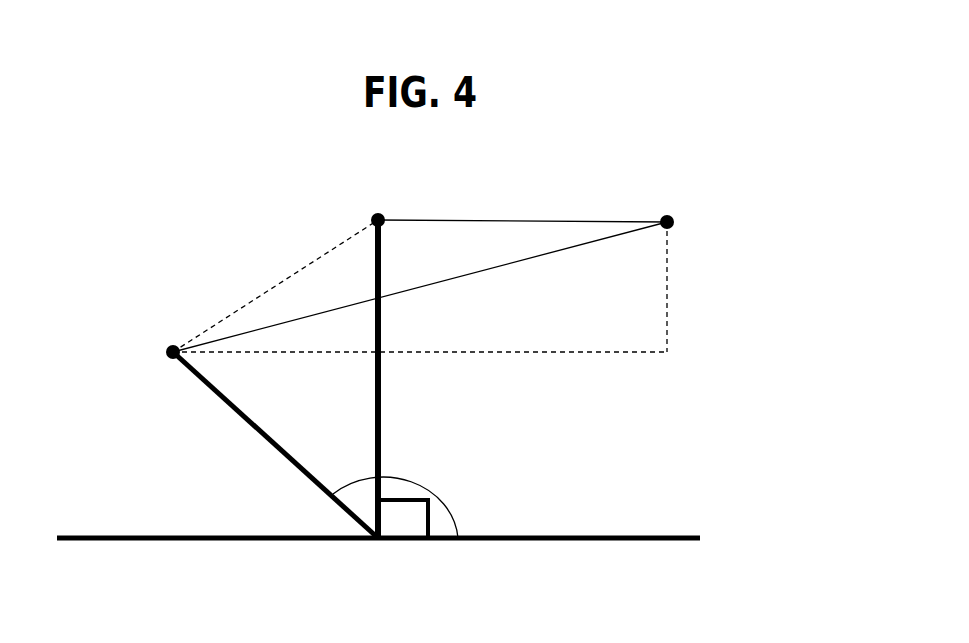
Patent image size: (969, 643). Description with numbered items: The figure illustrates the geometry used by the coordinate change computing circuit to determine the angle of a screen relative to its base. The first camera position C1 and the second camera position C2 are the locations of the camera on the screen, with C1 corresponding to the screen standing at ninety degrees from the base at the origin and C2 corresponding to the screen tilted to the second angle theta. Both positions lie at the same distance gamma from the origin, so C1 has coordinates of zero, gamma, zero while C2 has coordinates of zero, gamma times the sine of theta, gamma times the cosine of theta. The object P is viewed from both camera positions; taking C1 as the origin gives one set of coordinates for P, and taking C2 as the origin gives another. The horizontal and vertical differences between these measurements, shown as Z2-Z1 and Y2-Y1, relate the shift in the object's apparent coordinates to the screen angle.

The first camera position C1 is at (374, 360).
The second camera position C2 is at (256, 379).
The object P is at (433, 269).
The difference in Y coordinates of the object Y2-Y1 is at (667, 295).
The difference in Z coordinates of the object Z2-Z1 is at (597, 354).